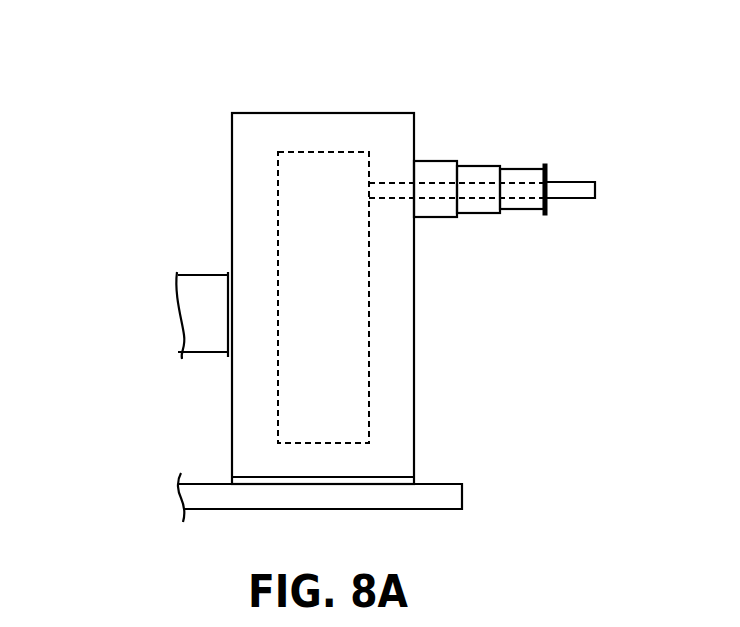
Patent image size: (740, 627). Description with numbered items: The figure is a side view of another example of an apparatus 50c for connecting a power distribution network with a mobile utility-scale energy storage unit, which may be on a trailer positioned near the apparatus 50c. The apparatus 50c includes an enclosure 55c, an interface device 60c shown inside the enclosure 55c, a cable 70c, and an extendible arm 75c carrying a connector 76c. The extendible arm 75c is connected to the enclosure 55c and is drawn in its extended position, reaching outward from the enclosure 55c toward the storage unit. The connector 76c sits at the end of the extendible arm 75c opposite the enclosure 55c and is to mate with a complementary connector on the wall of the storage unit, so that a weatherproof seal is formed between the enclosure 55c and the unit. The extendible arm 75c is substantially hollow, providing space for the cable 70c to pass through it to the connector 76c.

The apparatus 50c is at (106, 81).
The enclosure 55c is at (323, 112).
The interface device 60c is at (346, 313).
The cable 70c is at (583, 180).
The extendible arm 75c is at (441, 160).
The connector 76c is at (543, 162).